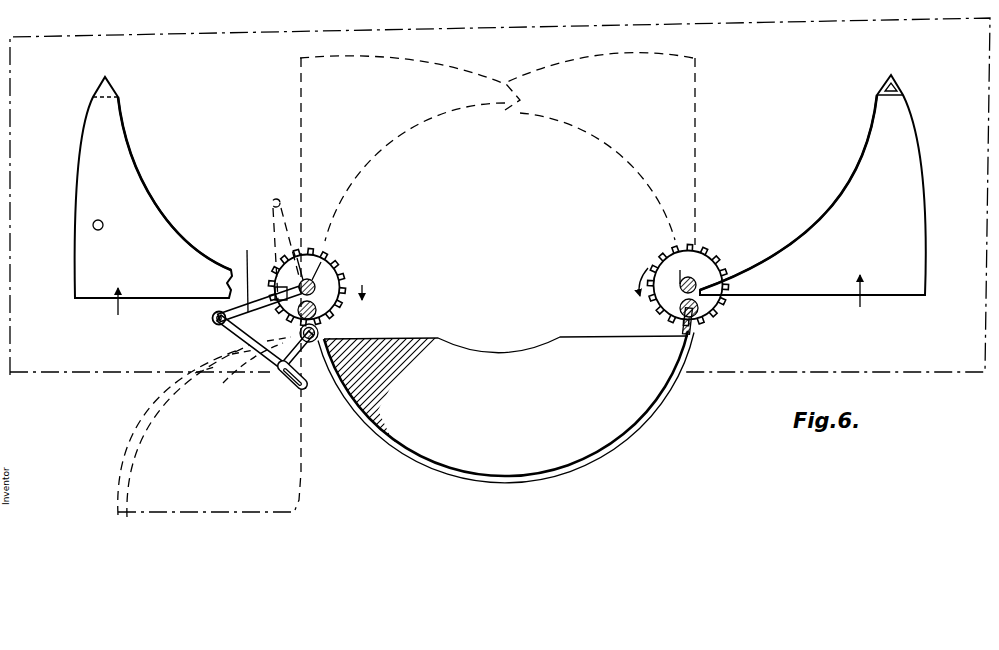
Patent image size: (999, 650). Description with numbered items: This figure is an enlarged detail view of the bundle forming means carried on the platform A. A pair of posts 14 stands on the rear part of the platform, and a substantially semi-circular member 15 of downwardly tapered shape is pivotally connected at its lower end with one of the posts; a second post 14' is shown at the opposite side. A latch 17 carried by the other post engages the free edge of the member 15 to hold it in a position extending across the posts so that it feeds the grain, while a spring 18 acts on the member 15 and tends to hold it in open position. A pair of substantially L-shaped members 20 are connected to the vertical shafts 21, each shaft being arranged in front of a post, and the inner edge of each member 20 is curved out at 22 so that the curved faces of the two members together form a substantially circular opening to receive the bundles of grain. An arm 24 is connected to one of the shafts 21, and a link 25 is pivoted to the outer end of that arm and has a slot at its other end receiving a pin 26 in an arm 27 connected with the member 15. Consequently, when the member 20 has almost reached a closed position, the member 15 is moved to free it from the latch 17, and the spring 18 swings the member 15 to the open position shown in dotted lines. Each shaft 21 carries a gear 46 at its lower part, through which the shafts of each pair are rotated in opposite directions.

The platform A is at (186, 43).
The post 14 is at (348, 318).
The pinion 14' is at (567, 309).
The semi-circular member 15 is at (400, 452).
The latch 17 is at (690, 348).
The spring 18 is at (330, 340).
The L-shaped member 20 is at (86, 149).
The vertical shaft 21 is at (314, 283).
The curved inner edge 22 is at (141, 179).
The arm 24 is at (284, 243).
The link 25 is at (272, 204).
The pin 26 is at (277, 374).
The arm 27 is at (278, 368).
The gear 46 is at (330, 290).